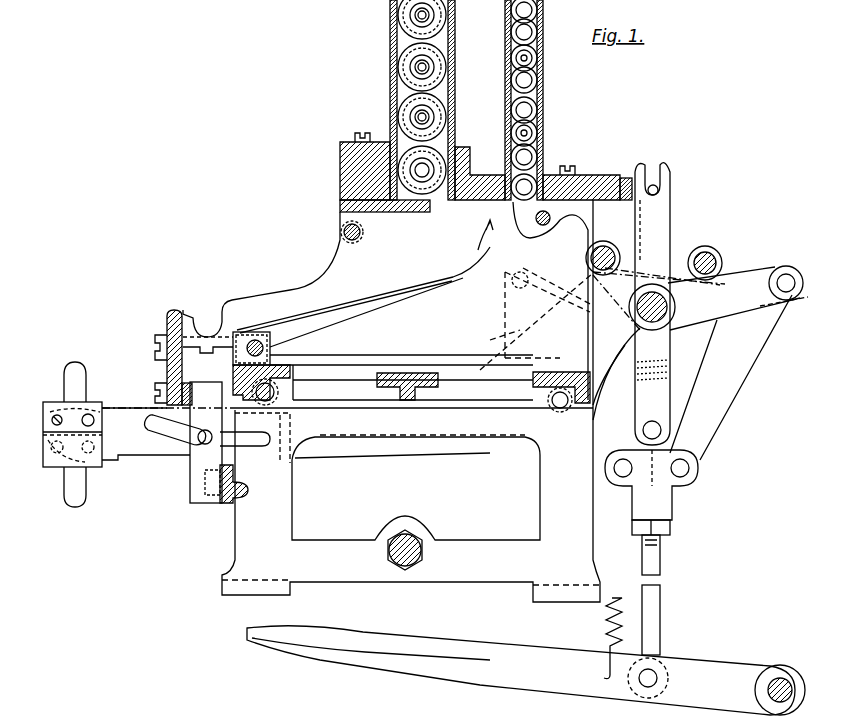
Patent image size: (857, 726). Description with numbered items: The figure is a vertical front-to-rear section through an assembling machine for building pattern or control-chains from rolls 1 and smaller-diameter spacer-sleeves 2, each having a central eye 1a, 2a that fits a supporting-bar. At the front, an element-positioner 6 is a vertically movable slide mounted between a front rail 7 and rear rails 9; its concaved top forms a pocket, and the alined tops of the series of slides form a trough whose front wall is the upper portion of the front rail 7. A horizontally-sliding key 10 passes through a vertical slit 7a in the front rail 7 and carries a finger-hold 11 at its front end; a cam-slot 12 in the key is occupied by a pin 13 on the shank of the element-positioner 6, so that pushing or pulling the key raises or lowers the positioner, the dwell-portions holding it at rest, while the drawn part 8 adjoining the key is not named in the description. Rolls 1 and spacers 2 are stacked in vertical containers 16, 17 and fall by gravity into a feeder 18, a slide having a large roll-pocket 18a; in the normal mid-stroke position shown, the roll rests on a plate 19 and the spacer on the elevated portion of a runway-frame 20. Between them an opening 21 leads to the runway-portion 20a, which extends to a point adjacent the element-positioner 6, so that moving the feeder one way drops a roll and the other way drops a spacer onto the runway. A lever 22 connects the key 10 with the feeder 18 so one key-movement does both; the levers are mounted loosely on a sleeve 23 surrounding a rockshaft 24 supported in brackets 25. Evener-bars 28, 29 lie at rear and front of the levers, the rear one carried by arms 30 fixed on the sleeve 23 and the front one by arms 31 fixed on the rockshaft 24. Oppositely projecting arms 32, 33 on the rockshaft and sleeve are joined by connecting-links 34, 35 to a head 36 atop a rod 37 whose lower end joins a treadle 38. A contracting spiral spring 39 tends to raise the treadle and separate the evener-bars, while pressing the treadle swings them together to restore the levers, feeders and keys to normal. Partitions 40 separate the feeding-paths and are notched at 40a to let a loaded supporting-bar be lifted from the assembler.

The roll 1 is at (405, 46).
The central opening of roll 1a is at (400, 12).
The spacer-sleeve 2 is at (508, 50).
The central opening of spacer-sleeve 2a is at (530, 58).
The element-positioner 6 is at (190, 364).
The front rail 7 is at (168, 322).
The vertical slit in front rail 7a is at (182, 395).
The slide bar 8 is at (160, 466).
The rear rail 9 is at (272, 352).
The key 10 is at (120, 410).
The finger-hold 11 is at (72, 372).
The cam-slot 12 is at (192, 437).
The pin 13 is at (200, 445).
The roll container 16 is at (392, 78).
The spacer container 17 is at (545, 105).
The feeder 18 is at (340, 172).
The roll-pocket 18a is at (395, 205).
The plate 19 is at (340, 208).
The runway-frame 20 is at (600, 190).
The runway-portion 20a is at (390, 300).
The opening 21 is at (472, 239).
The lever 22 is at (672, 238).
The sleeve 23 is at (662, 322).
The rockshaft 24 is at (714, 298).
The bracket 25 is at (600, 360).
The rear evener-bar 28 is at (718, 262).
The front evener-bar 29 is at (606, 248).
The arm 30 is at (680, 265).
The arm 31 is at (642, 258).
The arm 32 is at (762, 272).
The arm 33 is at (560, 272).
The connecting-link 34 is at (730, 395).
The connecting-link 35 is at (515, 322).
The head 36 is at (672, 505).
The rod 37 is at (662, 560).
The treadle 38 is at (478, 648).
The spiral spring 39 is at (604, 622).
The partition 40 is at (283, 292).
The notch 40a is at (207, 330).